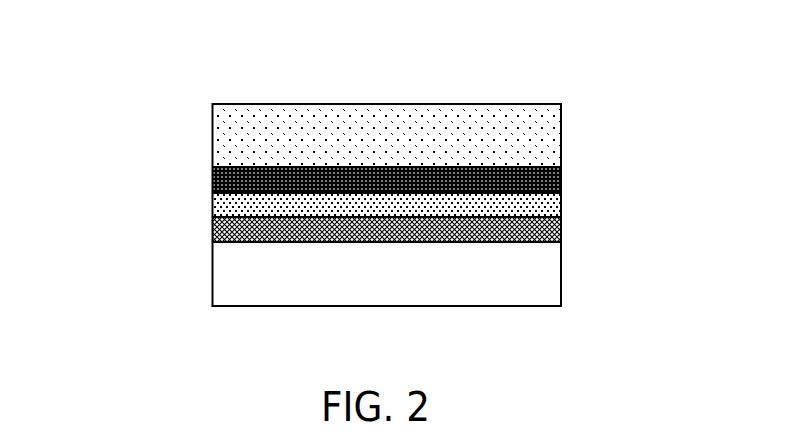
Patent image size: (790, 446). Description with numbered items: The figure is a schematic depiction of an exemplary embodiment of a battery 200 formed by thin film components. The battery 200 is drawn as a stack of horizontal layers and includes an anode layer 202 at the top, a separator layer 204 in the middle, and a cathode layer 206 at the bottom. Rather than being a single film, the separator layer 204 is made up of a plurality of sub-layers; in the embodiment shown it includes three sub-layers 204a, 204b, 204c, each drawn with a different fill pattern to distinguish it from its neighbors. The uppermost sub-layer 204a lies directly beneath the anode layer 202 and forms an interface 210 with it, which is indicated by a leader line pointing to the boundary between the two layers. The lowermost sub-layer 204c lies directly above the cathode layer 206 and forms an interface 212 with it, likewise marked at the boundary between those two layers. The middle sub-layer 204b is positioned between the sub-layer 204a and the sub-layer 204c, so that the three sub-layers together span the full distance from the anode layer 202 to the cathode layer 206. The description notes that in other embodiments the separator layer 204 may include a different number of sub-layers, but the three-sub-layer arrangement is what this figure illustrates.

The battery 200 is at (112, 46).
The anode layer 202 is at (561, 112).
The separator layer 204 is at (406, 193).
The sub-layer 204a is at (561, 175).
The sub-layer 204b is at (561, 205).
The sub-layer 204c is at (561, 232).
The cathode layer 206 is at (561, 268).
The interface 210 is at (255, 167).
The interface 212 is at (255, 242).